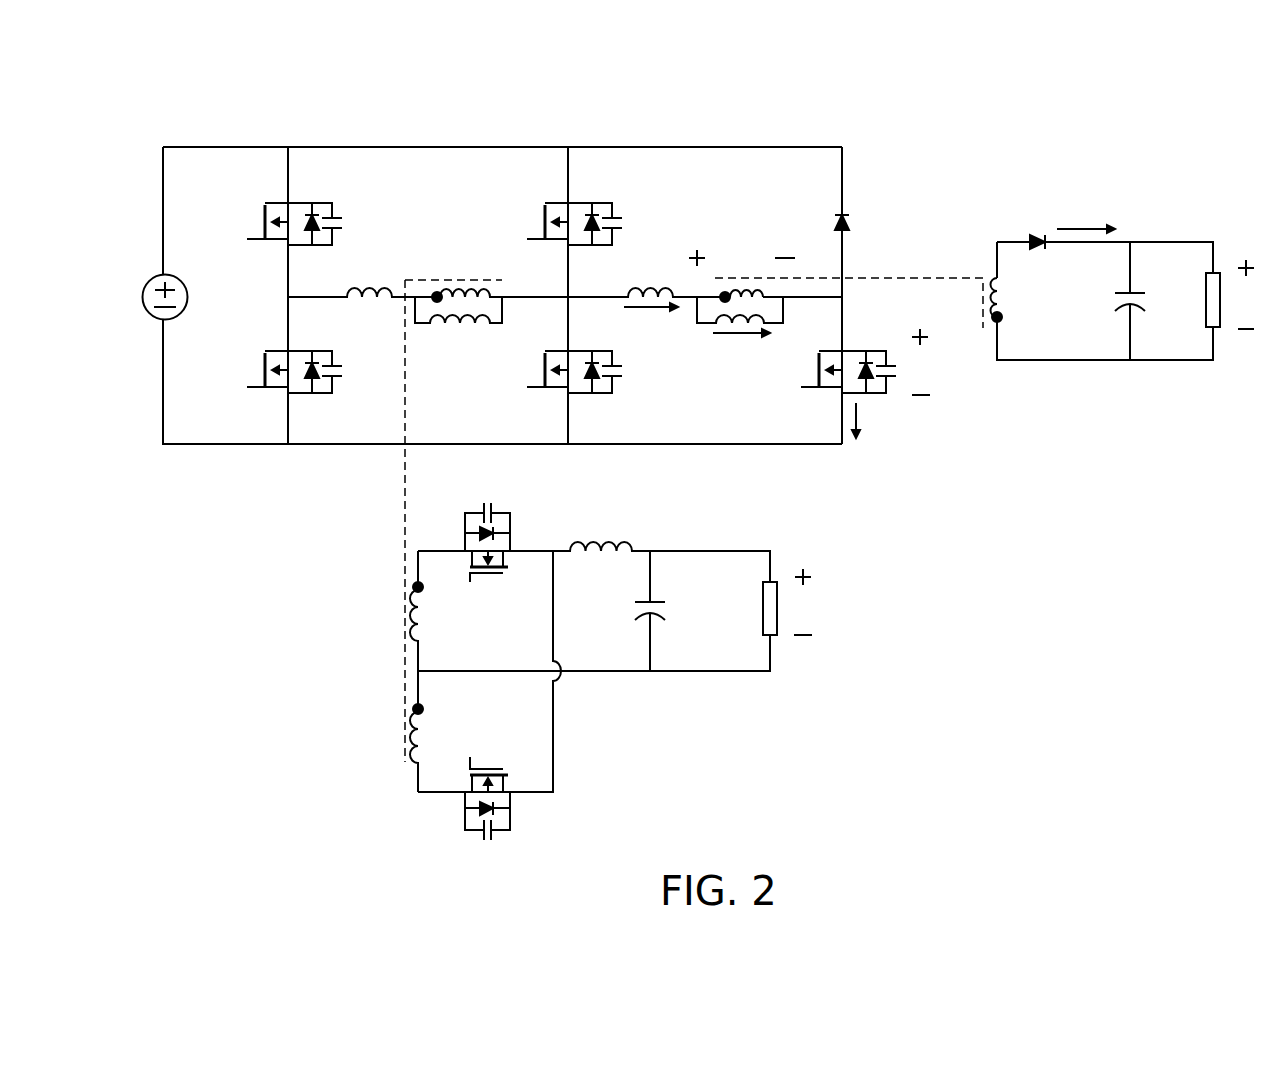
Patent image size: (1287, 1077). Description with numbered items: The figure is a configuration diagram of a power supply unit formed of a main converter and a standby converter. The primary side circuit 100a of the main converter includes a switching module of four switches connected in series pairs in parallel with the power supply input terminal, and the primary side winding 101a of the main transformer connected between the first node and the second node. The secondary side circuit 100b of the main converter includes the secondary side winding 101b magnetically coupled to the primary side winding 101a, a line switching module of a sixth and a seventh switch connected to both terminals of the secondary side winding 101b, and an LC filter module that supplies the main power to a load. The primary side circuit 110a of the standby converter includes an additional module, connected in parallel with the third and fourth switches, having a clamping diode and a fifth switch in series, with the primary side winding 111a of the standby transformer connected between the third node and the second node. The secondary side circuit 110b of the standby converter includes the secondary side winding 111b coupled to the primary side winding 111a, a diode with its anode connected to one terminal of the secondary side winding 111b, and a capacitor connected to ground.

The primary side circuit of the main converter 100a is at (560, 108).
The primary side circuit of the standby converter 110a is at (837, 108).
The primary side winding of the main transformer 101a is at (428, 268).
The primary side winding of the standby transformer 111a is at (698, 238).
The secondary side winding of the standby transformer 111b is at (983, 265).
The secondary side circuit of the standby converter 110b is at (1183, 217).
The secondary side winding of the main transformer 101b is at (398, 595).
The secondary side circuit of the main converter 100b is at (788, 545).